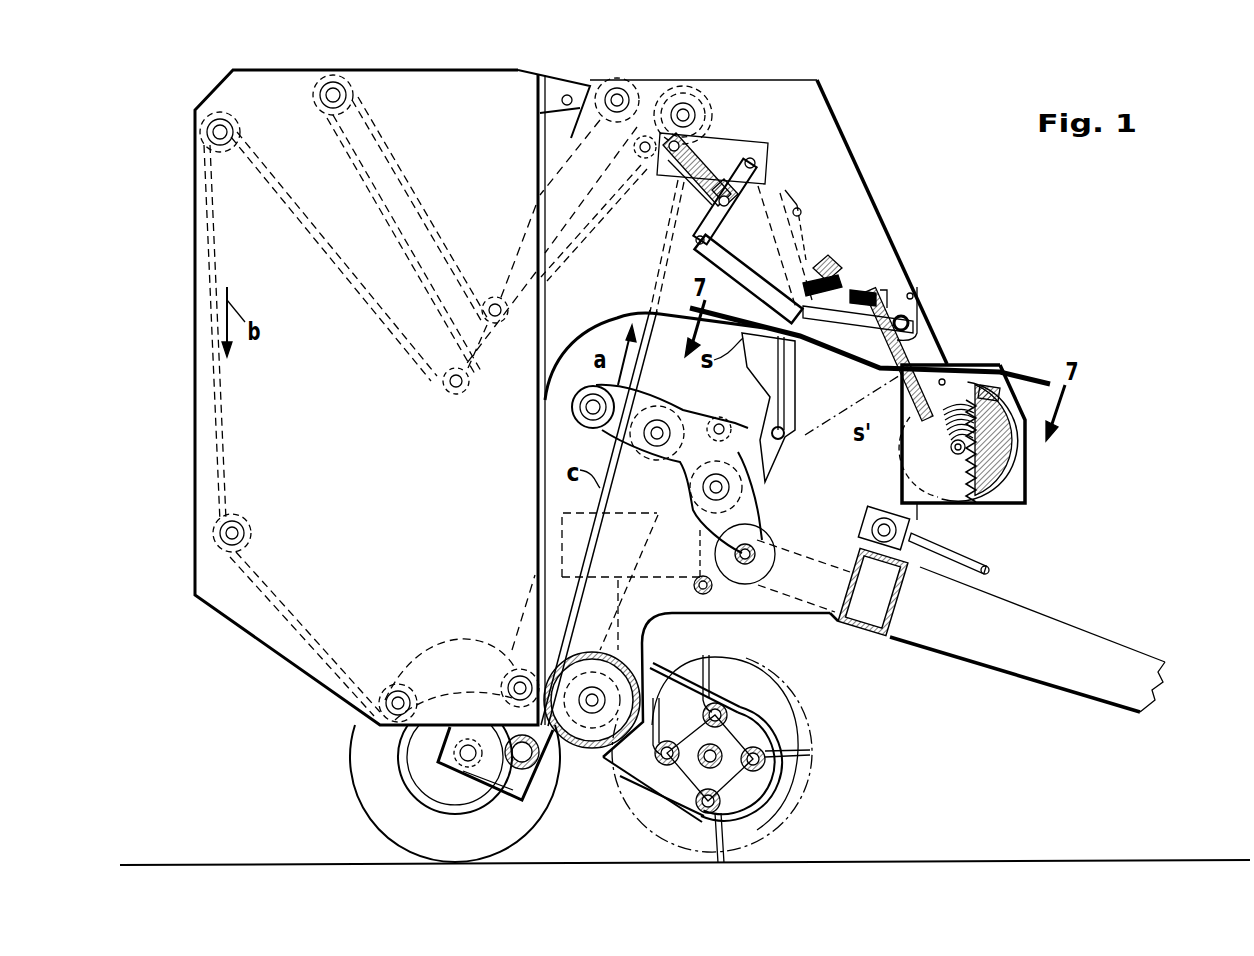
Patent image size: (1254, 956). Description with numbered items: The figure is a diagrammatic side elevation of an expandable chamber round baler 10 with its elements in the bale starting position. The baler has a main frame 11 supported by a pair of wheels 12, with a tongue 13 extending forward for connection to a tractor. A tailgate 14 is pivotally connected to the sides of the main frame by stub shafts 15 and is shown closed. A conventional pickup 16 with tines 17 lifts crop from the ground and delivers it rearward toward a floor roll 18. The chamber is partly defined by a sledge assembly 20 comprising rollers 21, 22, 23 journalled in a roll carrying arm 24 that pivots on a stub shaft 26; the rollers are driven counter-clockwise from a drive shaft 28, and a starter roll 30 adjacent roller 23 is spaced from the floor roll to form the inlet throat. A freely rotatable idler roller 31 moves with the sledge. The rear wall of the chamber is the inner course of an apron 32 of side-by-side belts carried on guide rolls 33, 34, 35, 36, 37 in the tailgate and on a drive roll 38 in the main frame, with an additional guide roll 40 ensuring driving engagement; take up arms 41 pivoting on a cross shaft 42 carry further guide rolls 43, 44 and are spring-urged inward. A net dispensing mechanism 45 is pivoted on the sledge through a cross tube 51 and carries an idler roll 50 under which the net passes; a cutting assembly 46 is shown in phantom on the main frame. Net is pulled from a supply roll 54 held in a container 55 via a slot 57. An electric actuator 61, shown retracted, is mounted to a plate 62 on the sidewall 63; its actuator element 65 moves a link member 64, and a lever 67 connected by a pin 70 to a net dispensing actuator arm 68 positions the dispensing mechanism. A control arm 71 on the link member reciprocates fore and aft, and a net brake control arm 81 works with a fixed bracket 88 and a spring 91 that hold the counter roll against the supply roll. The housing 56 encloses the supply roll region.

The round baler 10 is at (993, 247).
The main frame 11 is at (623, 590).
The wheels 12 is at (352, 792).
The tongue 13 is at (1065, 632).
The tailgate 14 is at (440, 68).
The stub shafts 15 is at (561, 100).
The pickup 16 is at (825, 738).
The tines 17 is at (808, 768).
The floor roll 18 is at (560, 738).
The sledge assembly 20 is at (590, 443).
The roller 21 is at (641, 466).
The roller 22 is at (690, 497).
The roller 23 is at (713, 548).
The roll carrying arm 24 is at (760, 508).
The stub shaft 26 is at (772, 573).
The drive shaft 28 is at (975, 558).
The starter roll 30 is at (712, 593).
The idler roller 31 is at (585, 385).
The apron 32 is at (205, 380).
The guide roll 33 is at (520, 672).
The guide roll 34 is at (398, 688).
The guide roll 35 is at (236, 518).
The guide roll 36 is at (232, 145).
The guide roll 37 is at (320, 110).
The drive roll 38 is at (685, 98).
The guide roll 40 is at (648, 135).
The take up arms 41 is at (527, 233).
The cross shaft 42 is at (603, 86).
The guide roll 43 is at (462, 392).
The guide roll 44 is at (495, 300).
The net dispensing mechanism 45 is at (797, 380).
The cutting assembly 46 is at (847, 265).
The idler roll 50 is at (782, 453).
The cross tube 51 is at (721, 424).
The supply roll 54 is at (1010, 460).
The container 55 is at (1030, 490).
The housing 56 is at (1000, 362).
The slot 57 is at (898, 385).
The electric actuator 61 is at (700, 145).
The plate 62 is at (742, 146).
The sidewall 63 is at (800, 165).
The link member 64 is at (732, 201).
The actuator element 65 is at (700, 205).
The lever 67 is at (785, 190).
The net dispensing actuator arm 68 is at (798, 243).
The pin 70 is at (800, 210).
The control arm 71 is at (720, 253).
The net brake control arm 81 is at (935, 348).
The fixed bracket 88 is at (930, 483).
The spring 91 is at (962, 505).